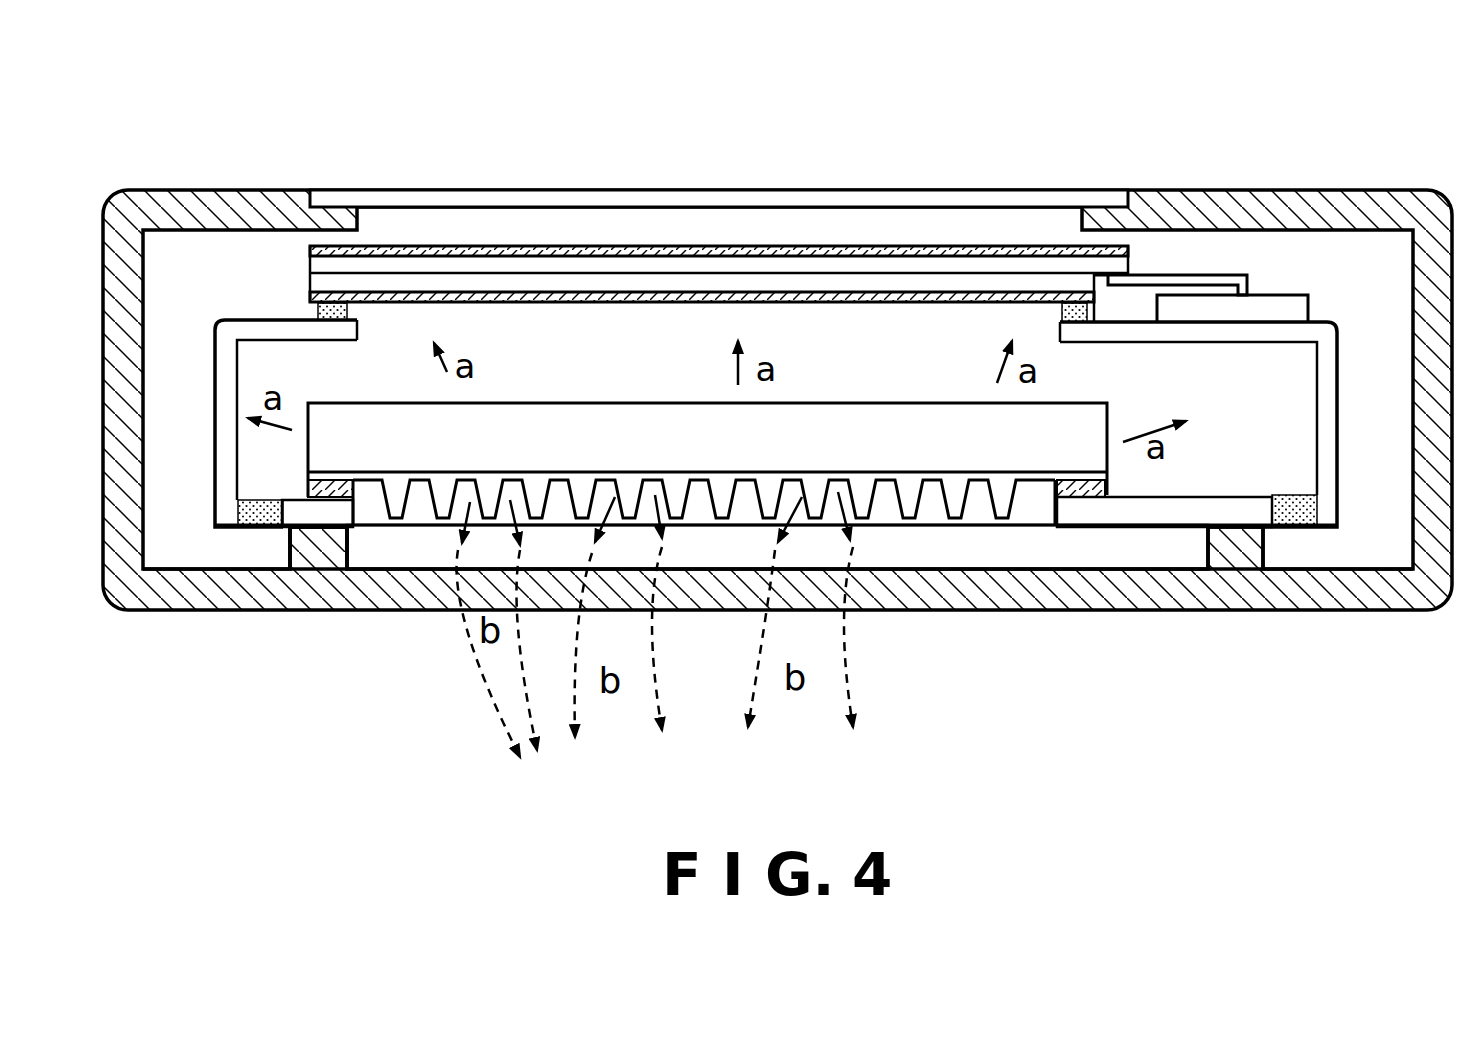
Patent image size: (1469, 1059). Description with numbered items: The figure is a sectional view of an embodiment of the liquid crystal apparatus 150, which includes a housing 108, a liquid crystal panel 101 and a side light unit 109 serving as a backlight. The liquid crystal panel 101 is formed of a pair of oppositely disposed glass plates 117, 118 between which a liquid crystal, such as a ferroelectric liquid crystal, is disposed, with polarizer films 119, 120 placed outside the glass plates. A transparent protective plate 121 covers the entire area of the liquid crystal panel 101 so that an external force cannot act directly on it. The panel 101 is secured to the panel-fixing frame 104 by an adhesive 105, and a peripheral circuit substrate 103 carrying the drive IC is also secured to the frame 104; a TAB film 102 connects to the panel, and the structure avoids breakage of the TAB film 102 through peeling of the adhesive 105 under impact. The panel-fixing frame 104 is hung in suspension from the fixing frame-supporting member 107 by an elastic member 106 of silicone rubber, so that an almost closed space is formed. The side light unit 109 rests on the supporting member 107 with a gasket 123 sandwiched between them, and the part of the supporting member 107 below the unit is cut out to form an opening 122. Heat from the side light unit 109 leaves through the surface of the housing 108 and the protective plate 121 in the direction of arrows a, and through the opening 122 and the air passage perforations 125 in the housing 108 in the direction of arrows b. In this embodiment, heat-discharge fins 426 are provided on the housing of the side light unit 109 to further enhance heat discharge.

The liquid crystal apparatus 150 is at (790, 162).
The protective plate 121 is at (373, 190).
The liquid crystal panel 101 is at (463, 241).
The polarizer film 119 is at (556, 240).
The polarizer film 120 is at (640, 298).
The glass plate 117 is at (913, 262).
The glass plate 118 is at (992, 282).
The adhesive 105 is at (1073, 301).
The TAB film 102 is at (1198, 282).
The peripheral circuit substrate 103 is at (1278, 307).
The panel-fixing frame 104 is at (258, 322).
The gasket 123 is at (333, 490).
The elastic member 106 is at (257, 527).
The fixing frame-supporting member 107 is at (317, 510).
The housing 108 is at (330, 552).
The opening 122 is at (373, 513).
The heat-discharge fins 426 is at (817, 485).
The side light unit 109 is at (1013, 438).
The air passage perforations 125 is at (1100, 590).